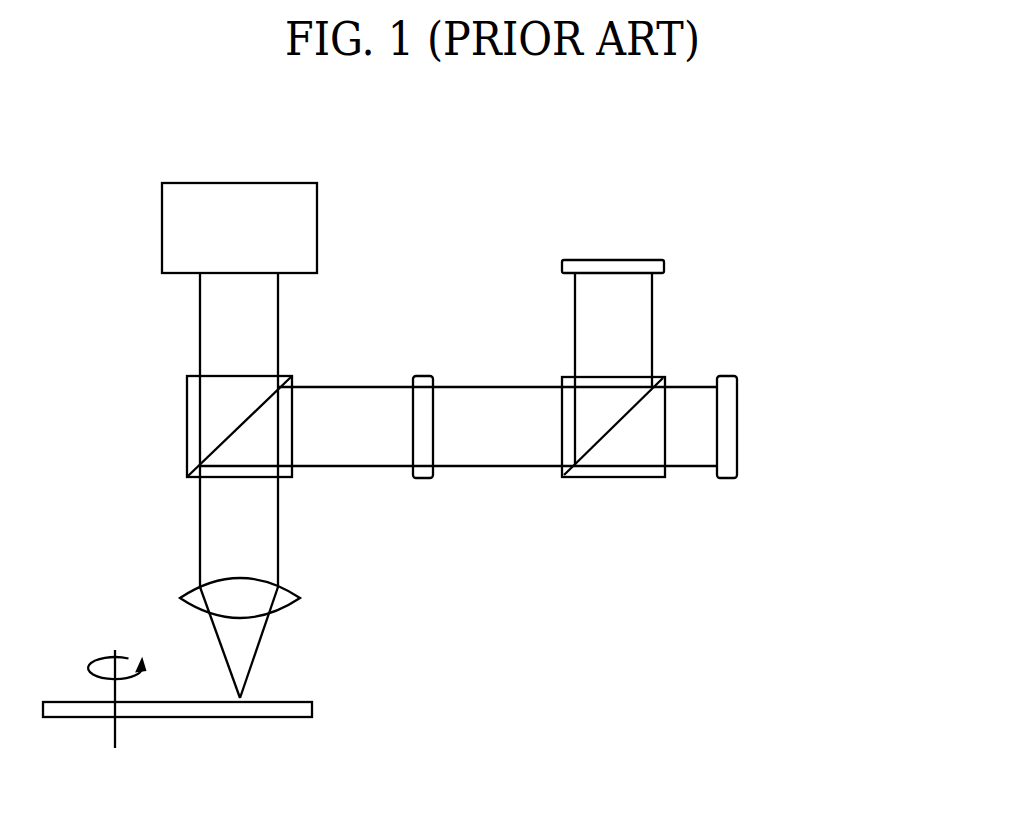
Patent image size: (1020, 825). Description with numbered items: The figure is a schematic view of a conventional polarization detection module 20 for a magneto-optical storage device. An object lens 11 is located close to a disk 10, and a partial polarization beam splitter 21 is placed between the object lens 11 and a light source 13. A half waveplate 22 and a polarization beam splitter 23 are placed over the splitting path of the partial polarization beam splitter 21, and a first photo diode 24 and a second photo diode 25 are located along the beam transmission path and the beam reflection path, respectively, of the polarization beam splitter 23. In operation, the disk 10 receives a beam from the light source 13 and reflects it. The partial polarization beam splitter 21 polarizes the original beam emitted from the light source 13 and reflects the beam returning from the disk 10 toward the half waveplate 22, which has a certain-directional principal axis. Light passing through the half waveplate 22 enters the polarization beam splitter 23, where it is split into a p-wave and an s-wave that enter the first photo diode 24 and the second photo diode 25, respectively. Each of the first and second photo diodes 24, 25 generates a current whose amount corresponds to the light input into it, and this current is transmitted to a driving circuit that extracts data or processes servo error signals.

The disk 10 is at (278, 717).
The object lens 11 is at (300, 598).
The light source 13 is at (240, 181).
The polarization detection module 20 is at (812, 164).
The partial polarization beam splitter 21 is at (187, 424).
The half waveplate 22 is at (423, 480).
The polarization beam splitter 23 is at (608, 480).
The first photo diode 24 is at (617, 258).
The second photo diode 25 is at (727, 480).